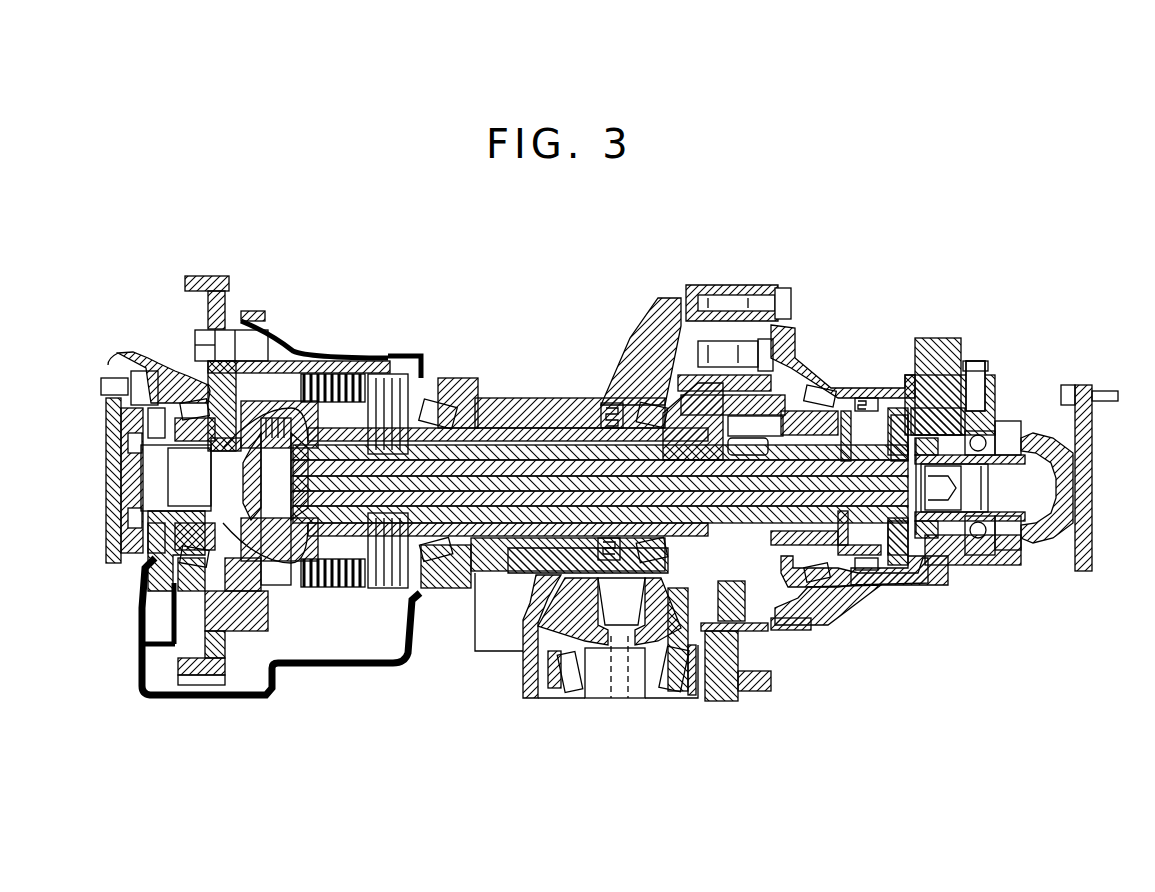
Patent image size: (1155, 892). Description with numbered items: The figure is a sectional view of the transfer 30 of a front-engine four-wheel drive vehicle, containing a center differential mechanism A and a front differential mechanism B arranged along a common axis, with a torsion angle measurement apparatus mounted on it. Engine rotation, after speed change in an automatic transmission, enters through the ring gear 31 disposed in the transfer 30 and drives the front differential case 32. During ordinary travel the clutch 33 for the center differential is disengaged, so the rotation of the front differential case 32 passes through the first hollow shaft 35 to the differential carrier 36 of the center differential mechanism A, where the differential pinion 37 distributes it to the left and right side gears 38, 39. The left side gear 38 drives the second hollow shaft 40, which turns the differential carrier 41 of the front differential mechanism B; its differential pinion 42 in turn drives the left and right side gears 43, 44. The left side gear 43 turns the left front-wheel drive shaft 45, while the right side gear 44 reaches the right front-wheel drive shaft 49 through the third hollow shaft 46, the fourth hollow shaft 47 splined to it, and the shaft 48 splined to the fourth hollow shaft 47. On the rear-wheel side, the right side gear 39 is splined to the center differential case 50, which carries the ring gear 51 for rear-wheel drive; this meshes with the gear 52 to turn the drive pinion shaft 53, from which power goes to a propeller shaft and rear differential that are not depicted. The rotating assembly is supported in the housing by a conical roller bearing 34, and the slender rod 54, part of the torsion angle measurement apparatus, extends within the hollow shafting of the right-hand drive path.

The transfer 30 is at (394, 254).
The ring gear 31 is at (216, 287).
The front differential case 32 is at (270, 345).
The clutch for the center differential 33 is at (366, 352).
The conical roller bearing 34 is at (432, 370).
The first hollow shaft 35 is at (478, 410).
The differential carrier 36 is at (628, 398).
The differential pinion 37 is at (652, 360).
The side gear 38 is at (592, 650).
The side gear 39 is at (812, 560).
The second hollow shaft 40 is at (578, 437).
The differential carrier 41 is at (286, 563).
The differential pinion 42 is at (270, 565).
The side gear 43 is at (147, 530).
The side gear 44 is at (205, 545).
The left front-wheel drive shaft 45 is at (97, 460).
The third hollow shaft 46 is at (955, 553).
The fourth hollow shaft 47 is at (905, 382).
The shaft 48 is at (1020, 467).
The right front-wheel drive shaft 49 is at (1086, 481).
The center differential case 50 is at (790, 365).
The ring gear for rear-wheel drive 51 is at (676, 298).
The gear 52 is at (505, 660).
The drive pinion shaft 53 is at (640, 660).
The slender rod 54 is at (912, 568).
The center differential mechanism A is at (810, 385).
The front differential mechanism B is at (400, 640).